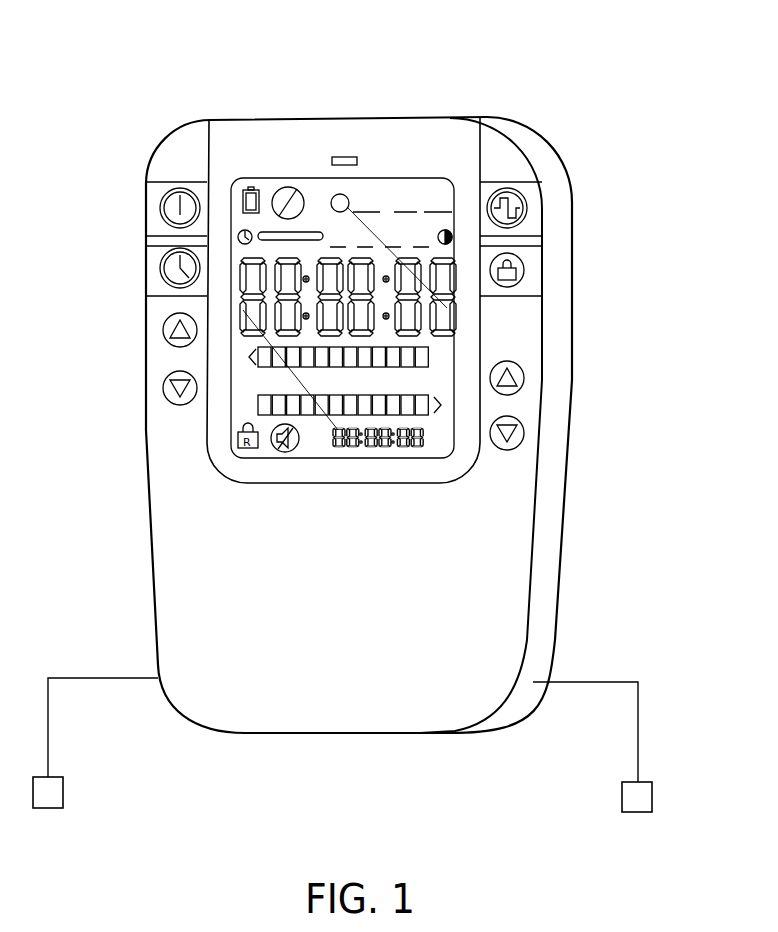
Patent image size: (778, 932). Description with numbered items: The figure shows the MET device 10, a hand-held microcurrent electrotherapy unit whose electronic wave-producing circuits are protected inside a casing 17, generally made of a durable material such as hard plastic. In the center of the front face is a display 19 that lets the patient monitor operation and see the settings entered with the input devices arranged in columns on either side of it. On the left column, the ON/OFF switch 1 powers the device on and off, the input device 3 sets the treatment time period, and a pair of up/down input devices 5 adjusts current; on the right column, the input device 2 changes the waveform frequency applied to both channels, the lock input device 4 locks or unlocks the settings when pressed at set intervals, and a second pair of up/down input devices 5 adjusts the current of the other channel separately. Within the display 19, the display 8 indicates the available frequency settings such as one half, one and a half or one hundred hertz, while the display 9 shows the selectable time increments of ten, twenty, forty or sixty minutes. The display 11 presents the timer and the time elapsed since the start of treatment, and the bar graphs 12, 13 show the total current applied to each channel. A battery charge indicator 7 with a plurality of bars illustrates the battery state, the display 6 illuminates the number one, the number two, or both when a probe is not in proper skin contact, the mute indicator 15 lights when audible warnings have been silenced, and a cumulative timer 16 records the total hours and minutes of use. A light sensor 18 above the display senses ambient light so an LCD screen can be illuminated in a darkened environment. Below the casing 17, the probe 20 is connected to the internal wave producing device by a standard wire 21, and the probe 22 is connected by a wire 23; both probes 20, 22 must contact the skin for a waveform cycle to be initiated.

The ON/OFF switch 1 is at (160, 208).
The input device 2 is at (527, 208).
The input device 3 is at (160, 265).
The lock input device 4 is at (527, 263).
The up/down input devices 5 is at (167, 384).
The display 6 is at (283, 188).
The battery charge indicator 7 is at (253, 188).
The display 8 is at (407, 190).
The display 9 is at (266, 232).
The MET device 10 is at (572, 98).
The display 11 is at (447, 308).
The bar graph 12 is at (430, 355).
The bar graph 13 is at (262, 405).
The mute indicator 15 is at (283, 452).
The cumulative timer 16 is at (410, 445).
The casing 17 is at (485, 592).
The light sensor 18 is at (344, 157).
The display 19 is at (452, 178).
The probe 20 is at (62, 792).
The wire 21 is at (90, 678).
The probe 22 is at (623, 794).
The wire 23 is at (638, 700).